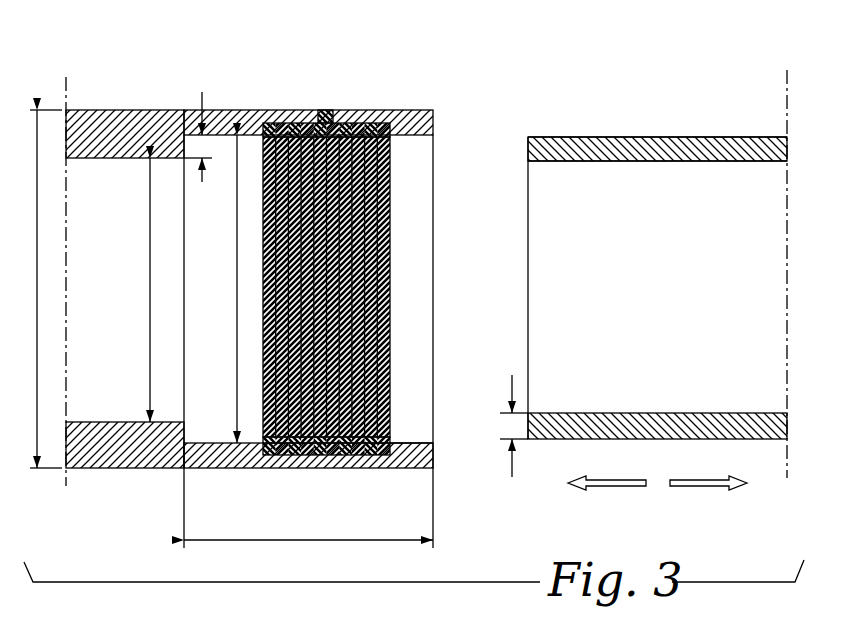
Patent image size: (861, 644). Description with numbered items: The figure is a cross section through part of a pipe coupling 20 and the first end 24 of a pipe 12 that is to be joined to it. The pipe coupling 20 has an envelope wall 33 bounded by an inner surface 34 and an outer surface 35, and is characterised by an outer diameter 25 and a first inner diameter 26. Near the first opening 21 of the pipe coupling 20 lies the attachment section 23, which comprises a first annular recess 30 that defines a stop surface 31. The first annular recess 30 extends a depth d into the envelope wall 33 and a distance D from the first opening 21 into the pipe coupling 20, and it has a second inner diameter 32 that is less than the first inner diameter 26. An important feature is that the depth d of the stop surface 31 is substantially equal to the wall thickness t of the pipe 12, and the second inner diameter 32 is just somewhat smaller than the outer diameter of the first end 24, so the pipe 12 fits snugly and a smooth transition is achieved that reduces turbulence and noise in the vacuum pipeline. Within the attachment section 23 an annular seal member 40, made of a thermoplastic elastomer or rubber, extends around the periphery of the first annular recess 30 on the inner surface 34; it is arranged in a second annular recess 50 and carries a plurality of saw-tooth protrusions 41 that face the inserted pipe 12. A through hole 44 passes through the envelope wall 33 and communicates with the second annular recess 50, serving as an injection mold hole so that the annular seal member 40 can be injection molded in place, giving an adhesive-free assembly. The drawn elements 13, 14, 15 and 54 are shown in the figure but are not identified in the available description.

The pipe 12 is at (638, 268).
The electrode assembly 13 is at (248, 281).
The pipe coupling 20 is at (248, 281).
The inner surface of case wall 14 is at (712, 161).
The outer surface of case wall 15 is at (740, 137).
The first opening 21 is at (433, 130).
The attachment section 23 is at (402, 198).
The first end 24 is at (625, 148).
The outer diameter 25 is at (34, 289).
The first inner diameter 26 is at (148, 276).
The first annular recess 30 is at (211, 446).
The stop surface 31 is at (190, 432).
The second inner diameter 32 is at (236, 251).
The envelope wall 33 is at (150, 134).
The inner surface 34 is at (124, 254).
The outer surface 35 is at (135, 468).
The annular seal member 40 is at (366, 278).
The protrusions 41 is at (388, 424).
The through hole 44 is at (323, 110).
The second annular recess 50 is at (311, 468).
The bottom wall end portion 54 is at (413, 447).